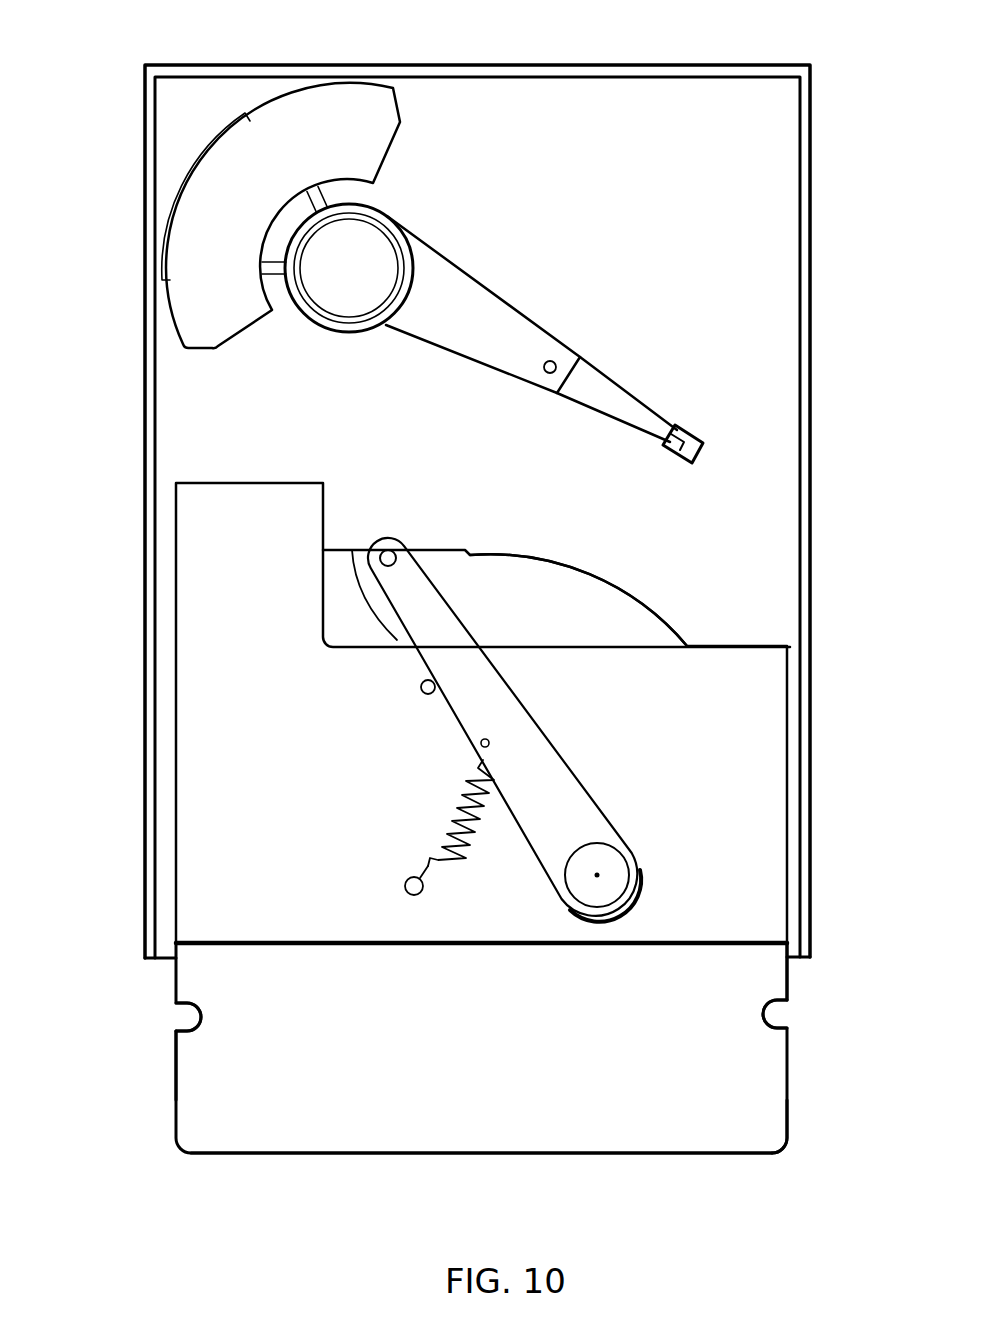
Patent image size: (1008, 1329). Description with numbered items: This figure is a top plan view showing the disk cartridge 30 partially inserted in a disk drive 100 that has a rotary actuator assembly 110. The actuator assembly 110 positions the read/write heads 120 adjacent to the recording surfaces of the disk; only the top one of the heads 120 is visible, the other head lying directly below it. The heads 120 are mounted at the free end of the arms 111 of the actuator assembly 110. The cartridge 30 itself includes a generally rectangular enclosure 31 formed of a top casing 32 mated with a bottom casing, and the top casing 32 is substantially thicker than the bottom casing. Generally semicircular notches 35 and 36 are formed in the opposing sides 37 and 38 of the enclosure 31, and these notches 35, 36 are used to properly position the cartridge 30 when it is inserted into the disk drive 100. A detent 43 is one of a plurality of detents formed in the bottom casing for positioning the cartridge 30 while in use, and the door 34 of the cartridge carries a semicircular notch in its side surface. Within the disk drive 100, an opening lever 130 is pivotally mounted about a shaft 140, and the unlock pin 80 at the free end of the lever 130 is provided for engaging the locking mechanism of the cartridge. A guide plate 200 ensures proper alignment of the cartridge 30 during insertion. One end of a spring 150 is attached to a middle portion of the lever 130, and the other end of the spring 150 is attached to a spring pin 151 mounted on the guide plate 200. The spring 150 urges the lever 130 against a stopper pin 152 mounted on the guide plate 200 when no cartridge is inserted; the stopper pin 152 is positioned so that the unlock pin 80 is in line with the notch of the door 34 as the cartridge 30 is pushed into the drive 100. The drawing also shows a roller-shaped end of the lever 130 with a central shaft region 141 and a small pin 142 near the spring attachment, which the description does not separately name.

The disk drive 100 is at (143, 723).
The guide plate 200 is at (176, 885).
The rotary actuator assembly 110 is at (445, 213).
The arms 111 is at (542, 328).
The read/write heads 120 is at (704, 446).
The unlock pin 80 is at (388, 549).
The door 34 is at (600, 578).
The detent 43 is at (383, 614).
The opening lever 130 is at (521, 844).
The shaft 140 is at (602, 915).
The roller shaft 141 is at (598, 876).
The spring anchor pin 142 is at (489, 741).
The spring 150 is at (442, 816).
The spring pin 151 is at (402, 892).
The stopper pin 152 is at (421, 690).
The disk cartridge 30 is at (803, 1055).
The enclosure 31 is at (180, 1150).
The top casing 32 is at (760, 1120).
The notch 35 is at (770, 1015).
The notch 36 is at (180, 1012).
The side 37 is at (793, 972).
The side 38 is at (176, 1085).